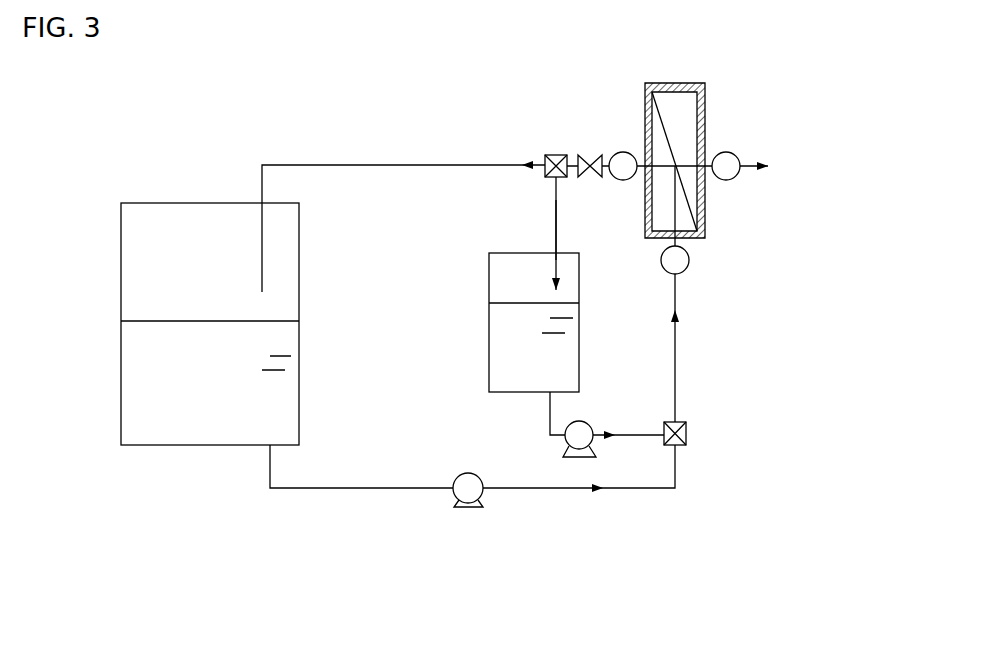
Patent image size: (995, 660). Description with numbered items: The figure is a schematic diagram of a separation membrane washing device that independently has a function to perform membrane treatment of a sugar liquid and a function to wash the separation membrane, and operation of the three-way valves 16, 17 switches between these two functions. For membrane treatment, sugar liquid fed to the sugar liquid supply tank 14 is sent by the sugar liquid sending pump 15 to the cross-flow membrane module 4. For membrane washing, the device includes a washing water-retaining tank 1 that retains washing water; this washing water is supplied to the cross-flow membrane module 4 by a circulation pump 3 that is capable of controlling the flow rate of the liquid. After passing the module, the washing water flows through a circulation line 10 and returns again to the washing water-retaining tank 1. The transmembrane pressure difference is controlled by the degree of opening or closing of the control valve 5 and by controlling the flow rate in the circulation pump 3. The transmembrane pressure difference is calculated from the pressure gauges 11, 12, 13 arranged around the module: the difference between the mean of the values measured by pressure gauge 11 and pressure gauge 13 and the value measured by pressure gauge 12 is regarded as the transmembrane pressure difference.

The washing water-retaining tank 1 is at (582, 277).
The circulation pump 3 is at (586, 422).
The cross-flow membrane module 4 is at (712, 218).
The control valve 5 is at (586, 155).
The circulation line 10 is at (563, 232).
The pressure gauge 11 is at (623, 152).
The pressure gauge 12 is at (730, 152).
The pressure gauge 13 is at (692, 258).
The sugar liquid supply tank 14 is at (118, 350).
The sugar liquid sending pump 15 is at (491, 497).
The three-way valve 16 is at (688, 432).
The three-way valve 17 is at (546, 156).